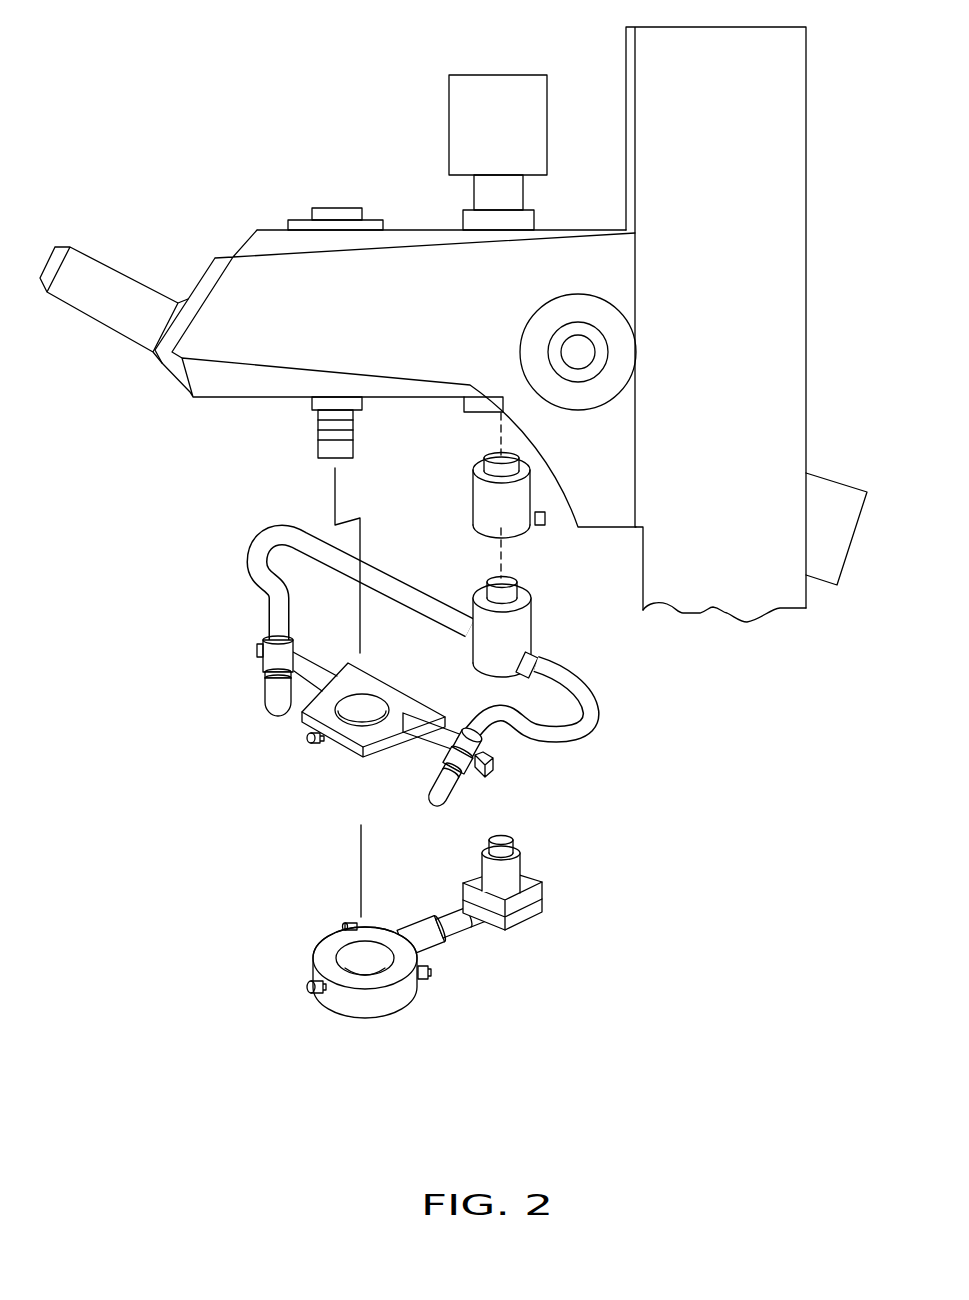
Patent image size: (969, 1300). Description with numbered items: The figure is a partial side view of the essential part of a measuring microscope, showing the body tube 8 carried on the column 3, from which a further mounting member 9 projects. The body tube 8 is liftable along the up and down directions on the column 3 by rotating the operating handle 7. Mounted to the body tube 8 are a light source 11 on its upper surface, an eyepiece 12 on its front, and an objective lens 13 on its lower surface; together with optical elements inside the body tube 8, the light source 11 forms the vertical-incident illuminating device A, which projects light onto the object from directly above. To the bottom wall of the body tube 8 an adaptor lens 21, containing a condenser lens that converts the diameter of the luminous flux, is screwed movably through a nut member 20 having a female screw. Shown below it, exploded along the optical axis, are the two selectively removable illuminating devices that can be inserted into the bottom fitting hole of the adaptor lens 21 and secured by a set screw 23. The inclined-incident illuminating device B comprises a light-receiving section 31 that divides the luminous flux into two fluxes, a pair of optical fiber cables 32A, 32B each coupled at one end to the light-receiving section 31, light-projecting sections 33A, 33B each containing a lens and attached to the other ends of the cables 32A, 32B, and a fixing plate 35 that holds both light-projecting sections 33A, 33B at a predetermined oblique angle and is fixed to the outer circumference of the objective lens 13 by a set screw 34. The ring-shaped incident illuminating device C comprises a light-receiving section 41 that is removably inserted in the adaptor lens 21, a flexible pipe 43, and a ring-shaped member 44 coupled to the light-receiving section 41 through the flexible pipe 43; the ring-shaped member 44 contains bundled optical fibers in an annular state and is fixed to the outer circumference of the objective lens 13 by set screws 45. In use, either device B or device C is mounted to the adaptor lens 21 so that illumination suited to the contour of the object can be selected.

The column 3 is at (793, 138).
The operating handle 7 is at (628, 353).
The body tube 8 is at (267, 230).
The bracket 9 is at (838, 483).
The light source 11 is at (503, 77).
The eyepiece 12 is at (87, 250).
The objective lens 13 is at (318, 428).
The nut member 20 is at (473, 412).
The adaptor lens 21 is at (474, 503).
The set screw 23 is at (545, 527).
The light-receiving section 31 is at (531, 632).
The optical fiber cable 32A is at (391, 601).
The optical fiber cable 32B is at (583, 735).
The light-projecting section 33A is at (262, 707).
The light-projecting section 33B is at (420, 790).
The set screw 34 is at (312, 736).
The fixing plate 35 is at (405, 703).
The light-receiving section 41 is at (542, 900).
The flexible pipe 43 is at (470, 931).
The ring-shaped member 44 is at (370, 1009).
The set screw 45 is at (348, 925).
The vertical-incident illuminating device A is at (375, 96).
The inclined-incident illuminating device B is at (662, 769).
The ring-shaped incident illuminating device C is at (543, 1035).